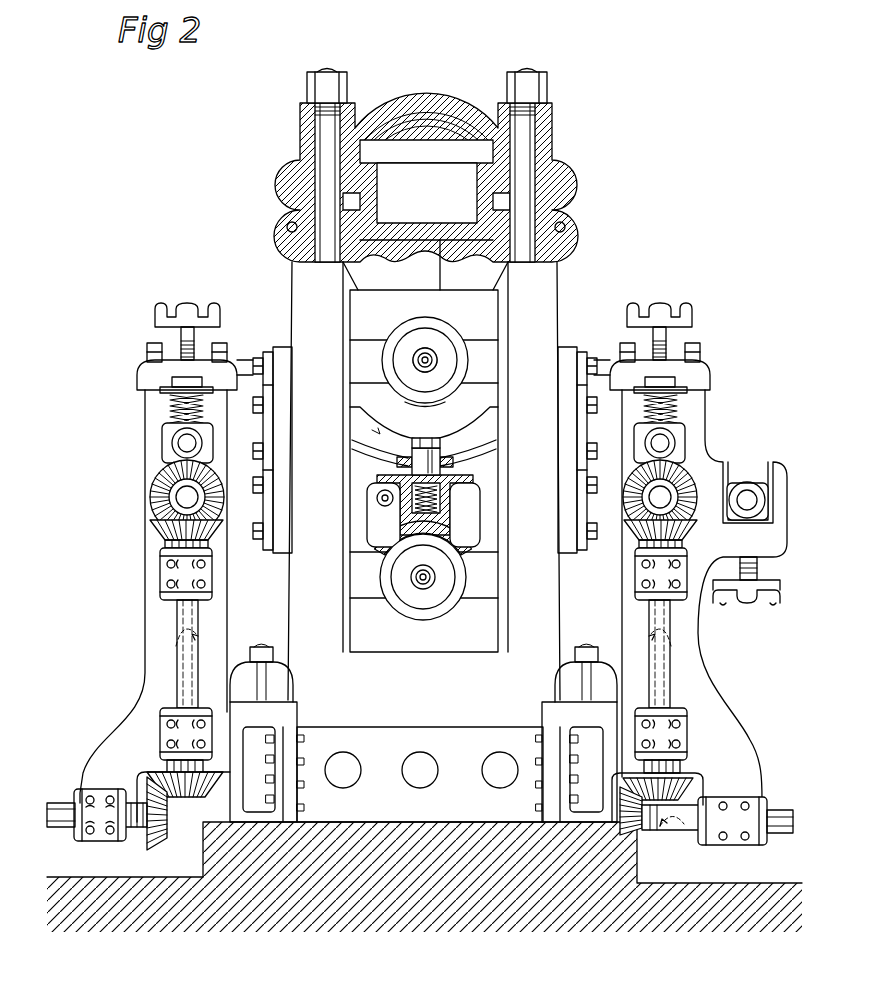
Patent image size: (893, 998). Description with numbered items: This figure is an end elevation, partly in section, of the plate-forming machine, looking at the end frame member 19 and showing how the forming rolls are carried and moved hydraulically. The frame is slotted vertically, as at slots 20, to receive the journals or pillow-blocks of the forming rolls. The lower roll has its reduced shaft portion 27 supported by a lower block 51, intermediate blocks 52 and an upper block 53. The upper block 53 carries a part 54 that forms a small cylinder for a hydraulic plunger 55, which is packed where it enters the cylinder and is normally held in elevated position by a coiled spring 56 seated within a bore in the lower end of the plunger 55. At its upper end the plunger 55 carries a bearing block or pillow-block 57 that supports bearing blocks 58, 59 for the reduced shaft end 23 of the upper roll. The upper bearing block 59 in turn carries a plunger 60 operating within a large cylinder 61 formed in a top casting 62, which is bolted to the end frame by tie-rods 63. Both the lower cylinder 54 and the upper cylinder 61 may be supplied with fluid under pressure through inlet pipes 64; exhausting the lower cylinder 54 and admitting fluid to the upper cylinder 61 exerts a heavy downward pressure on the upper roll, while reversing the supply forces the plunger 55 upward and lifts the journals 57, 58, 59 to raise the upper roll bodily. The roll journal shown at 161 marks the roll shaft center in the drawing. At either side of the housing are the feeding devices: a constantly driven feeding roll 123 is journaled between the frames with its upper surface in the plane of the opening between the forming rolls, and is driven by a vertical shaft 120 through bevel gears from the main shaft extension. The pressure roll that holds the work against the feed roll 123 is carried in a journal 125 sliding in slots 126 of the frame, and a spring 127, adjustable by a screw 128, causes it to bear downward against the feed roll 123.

The end frame member 19 is at (420, 754).
The vertical slots 20 is at (505, 328).
The reduced end of upper roll 23 is at (446, 331).
The reduced end of lower roll 27 is at (440, 604).
The lower block 51 is at (385, 637).
The intermediate blocks 52 is at (362, 579).
The upper block 53 is at (488, 513).
The cylinder 54 is at (397, 522).
The hydraulic plunger 55 is at (425, 455).
The coiled spring 56 is at (450, 500).
The bearing block 57 is at (482, 398).
The bearing block 58 is at (360, 358).
The upper bearing block 59 is at (379, 299).
The plunger 60 is at (477, 288).
The cylinder 61 is at (347, 137).
The top casting 62 is at (551, 160).
The tie-rods 63 is at (320, 134).
The inlet pipes 64 is at (382, 499).
The vertical shaft 120 is at (178, 662).
The feeding roll 123 is at (758, 572).
The journal 125 is at (160, 447).
The slots 126 is at (168, 414).
The spring 127 is at (168, 396).
The screw 128 is at (181, 340).
The roll journal 161 is at (422, 356).